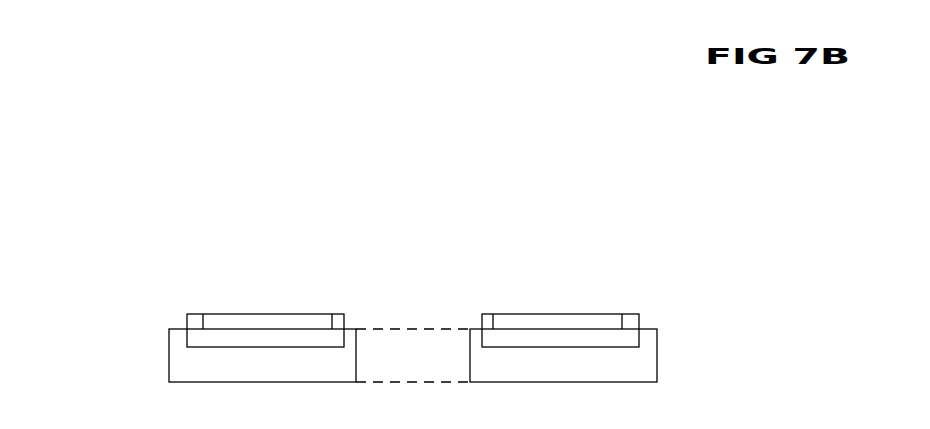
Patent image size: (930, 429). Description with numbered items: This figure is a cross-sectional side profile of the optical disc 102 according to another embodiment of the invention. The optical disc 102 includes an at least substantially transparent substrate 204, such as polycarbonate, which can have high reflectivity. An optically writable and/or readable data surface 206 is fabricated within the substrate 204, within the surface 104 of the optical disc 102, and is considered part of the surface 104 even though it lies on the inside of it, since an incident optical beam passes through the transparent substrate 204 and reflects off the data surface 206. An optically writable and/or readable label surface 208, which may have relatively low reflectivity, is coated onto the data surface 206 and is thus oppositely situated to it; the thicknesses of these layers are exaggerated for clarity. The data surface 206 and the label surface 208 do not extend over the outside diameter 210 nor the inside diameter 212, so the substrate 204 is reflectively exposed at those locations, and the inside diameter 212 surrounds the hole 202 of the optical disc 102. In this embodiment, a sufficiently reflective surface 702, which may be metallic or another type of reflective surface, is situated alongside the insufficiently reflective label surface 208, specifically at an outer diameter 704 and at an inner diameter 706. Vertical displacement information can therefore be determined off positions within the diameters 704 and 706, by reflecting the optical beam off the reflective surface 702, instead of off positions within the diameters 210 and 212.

The optical disc 102 is at (122, 172).
The surface 104 is at (668, 329).
The hole 202 is at (412, 329).
The substrate 204 is at (650, 373).
The data surface 206 is at (280, 339).
The label surface 208 is at (280, 317).
The outside diameter 210 is at (178, 329).
The inside diameter 212 is at (352, 329).
The reflective surface 702 is at (192, 322).
The outer diameter 704 is at (196, 313).
The inner diameter 706 is at (336, 313).